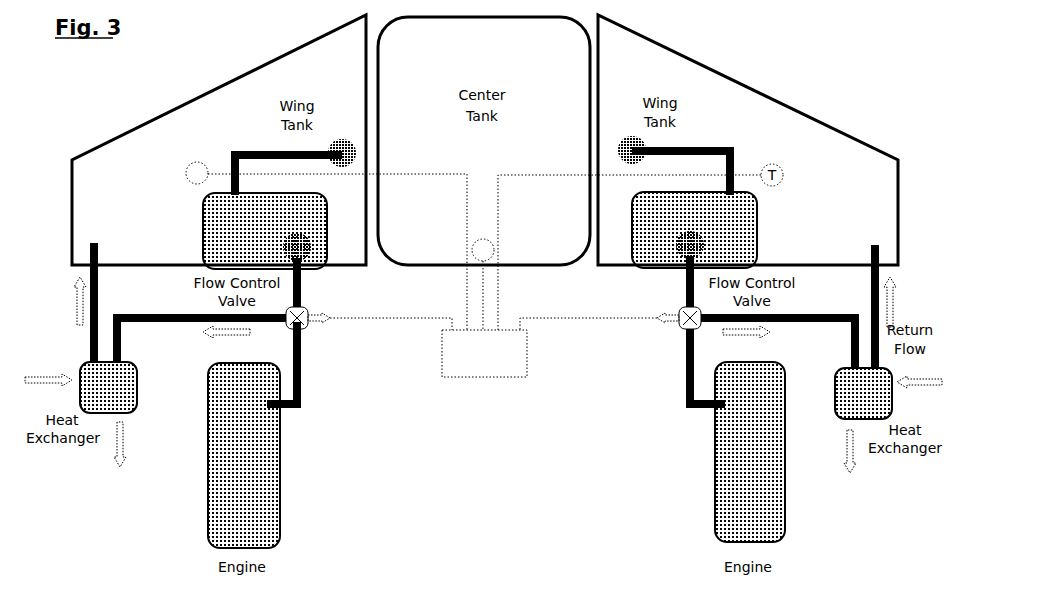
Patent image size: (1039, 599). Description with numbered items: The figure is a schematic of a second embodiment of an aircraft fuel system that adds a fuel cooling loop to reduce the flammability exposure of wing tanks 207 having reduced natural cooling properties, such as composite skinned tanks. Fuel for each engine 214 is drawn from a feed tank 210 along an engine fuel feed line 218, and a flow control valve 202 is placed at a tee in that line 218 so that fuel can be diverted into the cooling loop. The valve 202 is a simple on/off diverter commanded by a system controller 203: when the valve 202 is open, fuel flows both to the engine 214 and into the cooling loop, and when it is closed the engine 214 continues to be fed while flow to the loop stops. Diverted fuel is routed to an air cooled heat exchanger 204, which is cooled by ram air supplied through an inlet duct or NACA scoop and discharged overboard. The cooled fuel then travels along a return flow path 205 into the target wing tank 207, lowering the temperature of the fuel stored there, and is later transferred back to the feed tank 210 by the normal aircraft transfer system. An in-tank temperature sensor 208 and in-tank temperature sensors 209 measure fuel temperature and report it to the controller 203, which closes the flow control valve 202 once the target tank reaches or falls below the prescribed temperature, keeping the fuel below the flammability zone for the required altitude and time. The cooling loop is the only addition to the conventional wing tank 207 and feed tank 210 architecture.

The flow control valve 202 is at (486, 312).
The system controller 203 is at (484, 364).
The air cooled heat exchanger 204 is at (119, 378).
The return flow path 205 is at (60, 302).
The wing tank 207 is at (482, 152).
The in-tank temperature sensor 208 is at (483, 275).
The in-tank temperature sensor 209 is at (322, 236).
The feed tank 210 is at (480, 230).
The engine 214 is at (273, 487).
The engine fuel feed line 218 is at (301, 366).